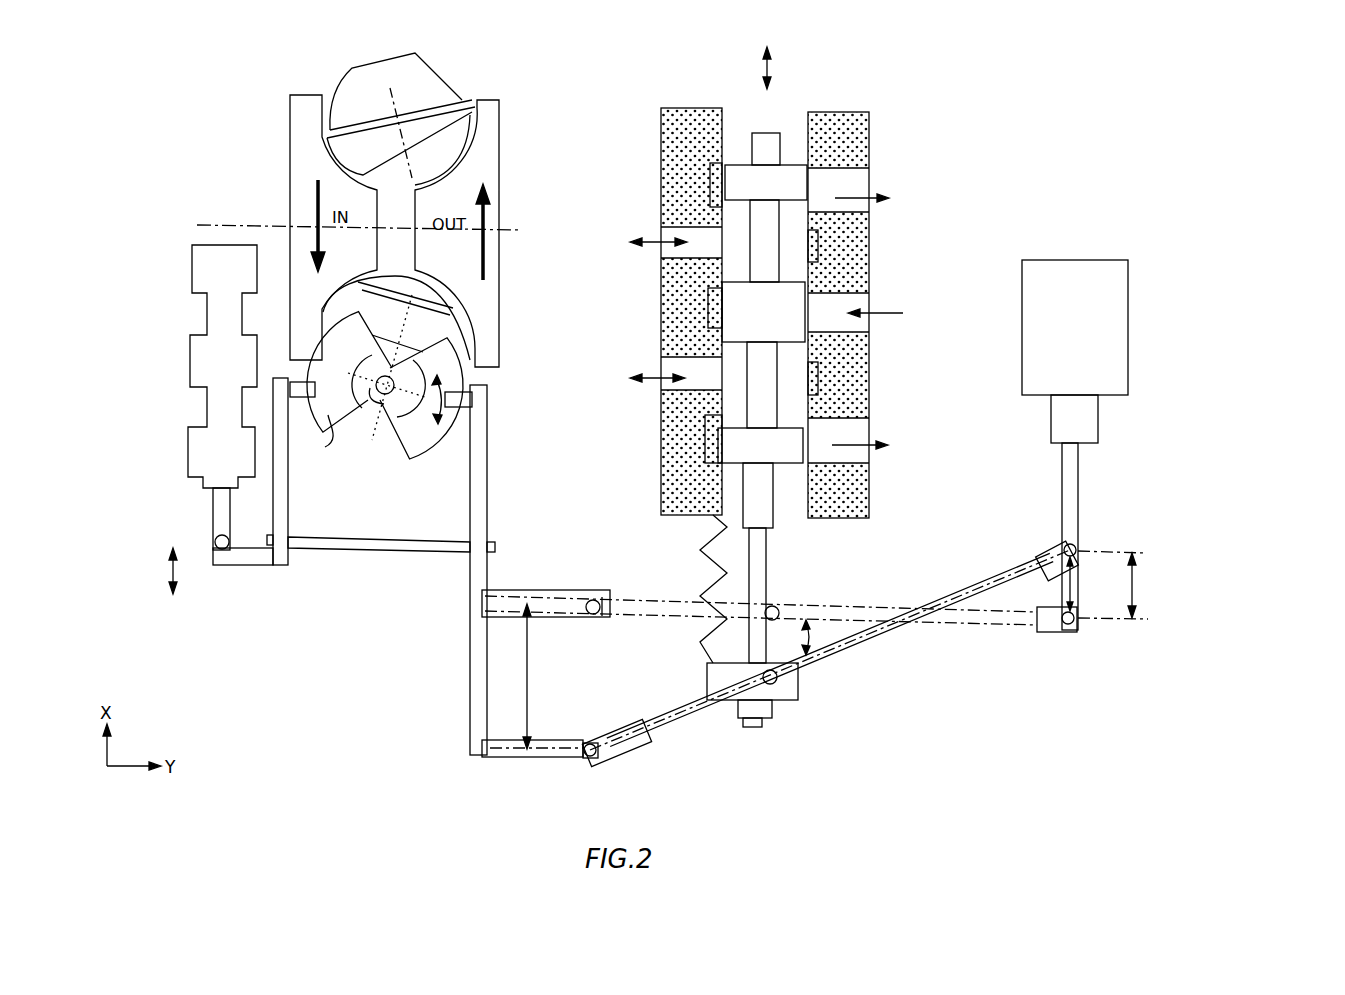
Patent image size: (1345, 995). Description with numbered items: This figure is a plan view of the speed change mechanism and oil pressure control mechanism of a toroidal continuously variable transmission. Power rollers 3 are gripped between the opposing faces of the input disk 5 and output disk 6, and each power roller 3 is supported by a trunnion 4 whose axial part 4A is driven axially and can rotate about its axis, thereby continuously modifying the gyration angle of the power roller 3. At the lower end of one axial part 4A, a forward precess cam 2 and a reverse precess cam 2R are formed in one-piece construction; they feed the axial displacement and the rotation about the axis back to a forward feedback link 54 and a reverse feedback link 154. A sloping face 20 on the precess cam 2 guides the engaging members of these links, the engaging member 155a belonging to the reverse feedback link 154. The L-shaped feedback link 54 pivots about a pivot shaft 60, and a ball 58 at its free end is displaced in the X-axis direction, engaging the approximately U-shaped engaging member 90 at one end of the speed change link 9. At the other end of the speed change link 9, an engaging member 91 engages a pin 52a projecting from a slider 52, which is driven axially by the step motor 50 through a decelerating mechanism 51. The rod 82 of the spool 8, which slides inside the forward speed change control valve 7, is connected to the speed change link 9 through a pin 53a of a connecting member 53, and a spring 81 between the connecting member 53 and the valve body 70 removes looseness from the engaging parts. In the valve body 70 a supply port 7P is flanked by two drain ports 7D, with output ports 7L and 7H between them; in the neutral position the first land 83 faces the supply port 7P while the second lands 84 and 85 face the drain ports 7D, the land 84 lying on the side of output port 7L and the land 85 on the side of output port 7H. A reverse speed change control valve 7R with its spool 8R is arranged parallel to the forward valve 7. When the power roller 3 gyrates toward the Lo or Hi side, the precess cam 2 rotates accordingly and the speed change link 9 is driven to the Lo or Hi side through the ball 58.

The forward precess cam 2 is at (440, 455).
The reverse precess cam 2R is at (316, 439).
The power roller 3 is at (466, 115).
The trunnion 4 is at (363, 87).
The axial part 4A is at (380, 408).
The input disk 5 is at (298, 117).
The output disk 6 is at (490, 115).
The forward speed change control valve 7 is at (897, 110).
The drain port 7D is at (855, 190).
The supply port 7P is at (860, 300).
The output port 7H is at (667, 232).
The output port 7L is at (668, 370).
The reverse speed change control valve 7R is at (152, 347).
The spool 8 is at (772, 166).
The actuator piston 8R is at (218, 322).
The speed change link 9 is at (896, 635).
The sloping face 20 is at (457, 377).
The step motor 50 is at (1108, 320).
The decelerating mechanism 51 is at (1100, 435).
The slider 52 is at (1070, 490).
The pin 52a is at (1077, 550).
The connecting member 53 is at (787, 710).
The pin 53a is at (790, 682).
The forward feedback link 54 is at (492, 508).
The ball 58 is at (568, 758).
The pivot shaft 60 is at (372, 543).
The valve body 70 is at (838, 117).
The spring 81 is at (713, 557).
The spool rod 82 is at (763, 563).
The land 83 is at (753, 308).
The land 84 is at (778, 447).
The land 85 is at (730, 183).
The engaging member 90 is at (608, 730).
The engaging member 91 is at (1036, 564).
The reverse feedback link 154 is at (296, 512).
The engaging member 155a is at (300, 390).